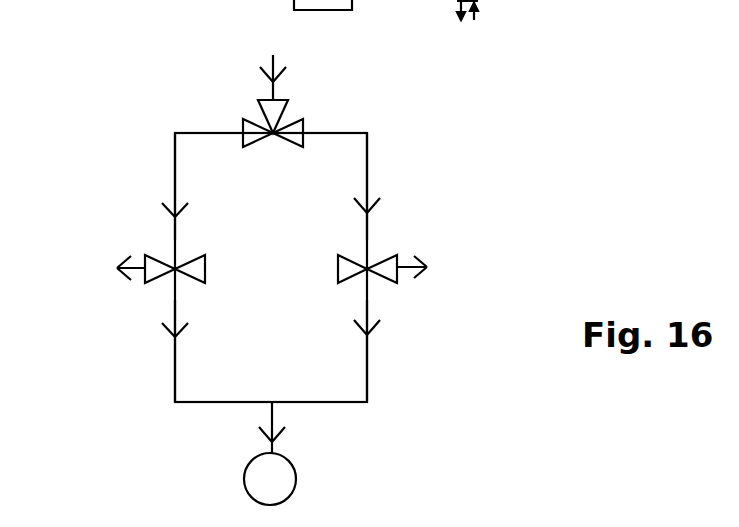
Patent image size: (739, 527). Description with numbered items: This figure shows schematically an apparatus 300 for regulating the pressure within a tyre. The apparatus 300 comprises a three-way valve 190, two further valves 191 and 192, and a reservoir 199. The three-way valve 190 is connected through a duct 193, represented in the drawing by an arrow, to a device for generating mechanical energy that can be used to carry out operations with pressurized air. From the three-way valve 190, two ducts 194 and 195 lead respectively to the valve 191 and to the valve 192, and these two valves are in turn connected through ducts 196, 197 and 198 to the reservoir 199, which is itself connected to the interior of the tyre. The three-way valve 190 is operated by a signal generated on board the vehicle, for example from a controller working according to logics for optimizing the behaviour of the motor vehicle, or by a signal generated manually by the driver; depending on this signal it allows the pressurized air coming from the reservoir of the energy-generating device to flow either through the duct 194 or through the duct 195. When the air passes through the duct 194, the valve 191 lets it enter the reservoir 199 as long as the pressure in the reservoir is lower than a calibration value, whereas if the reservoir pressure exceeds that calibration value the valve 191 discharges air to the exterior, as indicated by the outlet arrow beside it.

The apparatus for regulating the pressure within the tyre 300 is at (196, 125).
The three-way valve 190 is at (306, 125).
The valve 191 is at (165, 248).
The valve 192 is at (381, 247).
The duct 193 is at (292, 94).
The duct 194 is at (175, 157).
The duct 195 is at (367, 173).
The duct 196 is at (175, 362).
The duct 197 is at (367, 367).
The duct 198 is at (272, 412).
The reservoir 199 is at (234, 478).